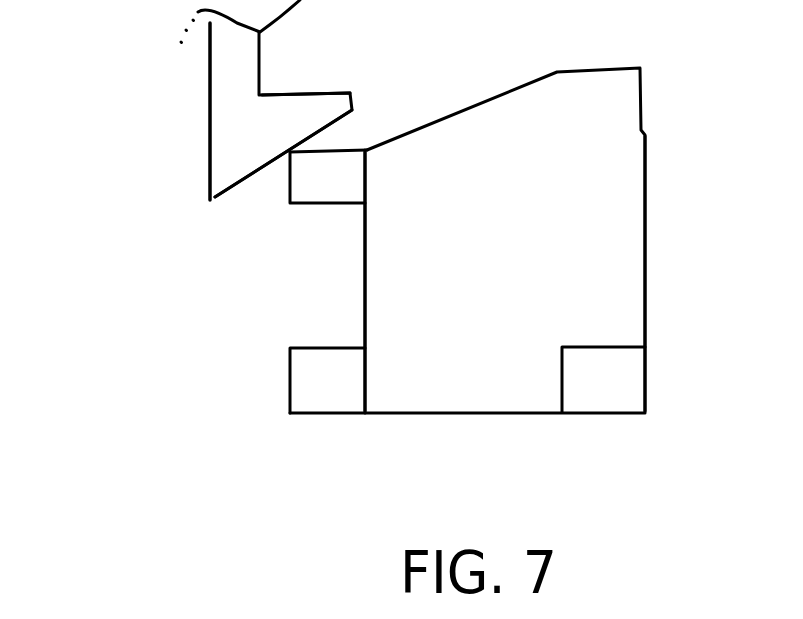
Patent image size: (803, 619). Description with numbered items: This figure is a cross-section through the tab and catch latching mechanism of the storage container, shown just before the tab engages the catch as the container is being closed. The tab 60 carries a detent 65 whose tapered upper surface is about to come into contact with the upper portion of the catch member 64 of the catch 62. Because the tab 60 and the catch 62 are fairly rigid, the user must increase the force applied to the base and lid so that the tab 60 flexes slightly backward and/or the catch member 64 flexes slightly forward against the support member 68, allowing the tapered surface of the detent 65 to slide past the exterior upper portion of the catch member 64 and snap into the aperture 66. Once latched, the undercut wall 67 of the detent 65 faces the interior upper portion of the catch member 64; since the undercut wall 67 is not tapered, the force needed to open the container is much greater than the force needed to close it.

The tab 60 is at (163, 168).
The catch 62 is at (452, 435).
The catch member 64 is at (328, 187).
The detent 65 is at (246, 185).
The aperture 66 is at (320, 295).
The undercut wall 67 is at (307, 92).
The support member 68 is at (610, 237).